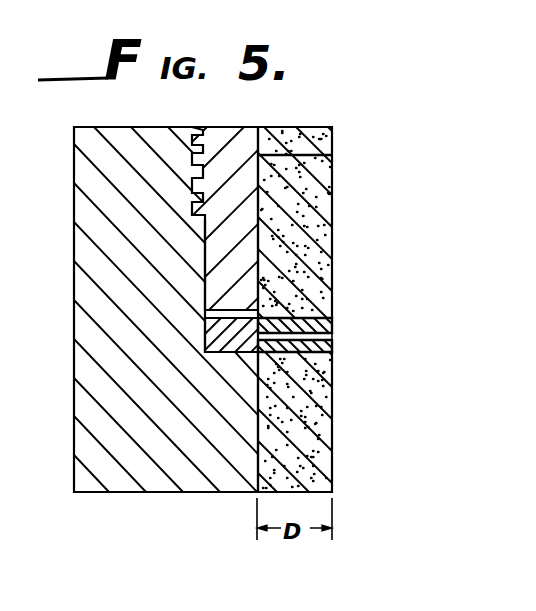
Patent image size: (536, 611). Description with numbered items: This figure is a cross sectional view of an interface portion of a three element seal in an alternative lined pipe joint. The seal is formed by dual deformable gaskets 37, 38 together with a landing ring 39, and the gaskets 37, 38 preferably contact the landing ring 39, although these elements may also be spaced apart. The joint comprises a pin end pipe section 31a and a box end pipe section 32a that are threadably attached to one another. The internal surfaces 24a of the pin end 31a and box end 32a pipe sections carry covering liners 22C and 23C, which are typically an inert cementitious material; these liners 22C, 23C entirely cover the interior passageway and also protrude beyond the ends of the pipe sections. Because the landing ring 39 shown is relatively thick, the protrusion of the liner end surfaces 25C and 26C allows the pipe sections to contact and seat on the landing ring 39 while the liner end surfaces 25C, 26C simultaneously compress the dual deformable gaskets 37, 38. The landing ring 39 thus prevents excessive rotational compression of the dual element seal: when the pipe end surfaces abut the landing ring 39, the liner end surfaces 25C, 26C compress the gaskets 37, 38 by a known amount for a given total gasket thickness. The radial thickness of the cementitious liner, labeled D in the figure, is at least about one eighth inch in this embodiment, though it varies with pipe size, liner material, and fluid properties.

The pin end pipe section 31a is at (78, 175).
The box end pipe section 32a is at (237, 128).
The internal surfaces 24a is at (332, 155).
The covering liner 22C is at (333, 220).
The liner end surface 25C is at (300, 318).
The deformable gasket 37 is at (337, 322).
The deformable gasket 38 is at (333, 345).
The liner end surface 26C is at (303, 354).
The covering liner 23C is at (333, 441).
The landing ring 39 is at (215, 353).